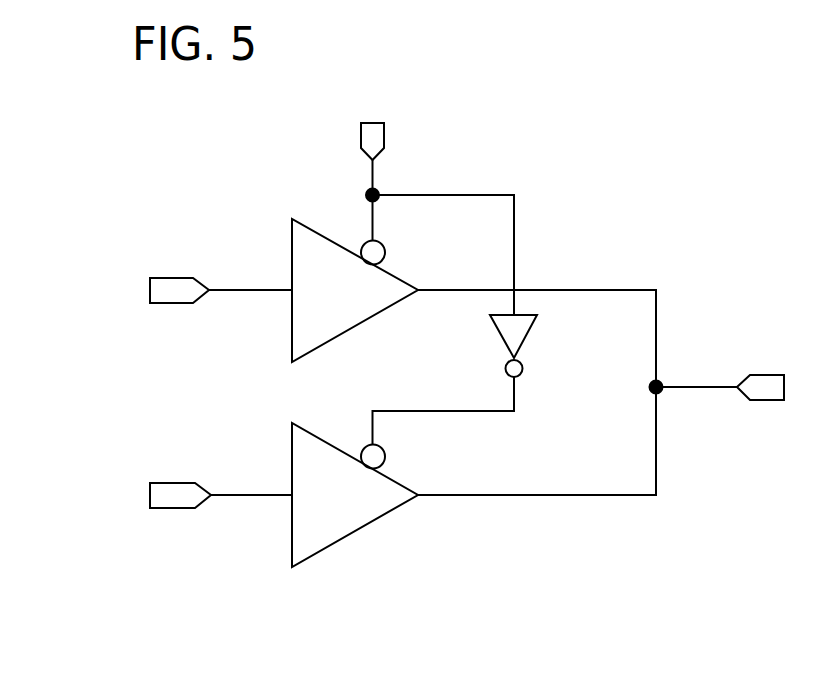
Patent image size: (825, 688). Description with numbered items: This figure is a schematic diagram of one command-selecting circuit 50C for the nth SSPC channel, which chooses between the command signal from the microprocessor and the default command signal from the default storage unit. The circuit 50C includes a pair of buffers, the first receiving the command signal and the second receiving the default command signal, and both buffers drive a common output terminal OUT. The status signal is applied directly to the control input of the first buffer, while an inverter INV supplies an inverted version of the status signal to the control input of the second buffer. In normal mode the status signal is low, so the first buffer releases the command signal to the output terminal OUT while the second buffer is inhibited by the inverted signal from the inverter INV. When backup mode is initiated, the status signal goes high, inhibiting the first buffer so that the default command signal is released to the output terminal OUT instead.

The command-selecting circuit 50C is at (653, 183).
The inverter INV is at (476, 380).
The output terminal OUT is at (719, 368).